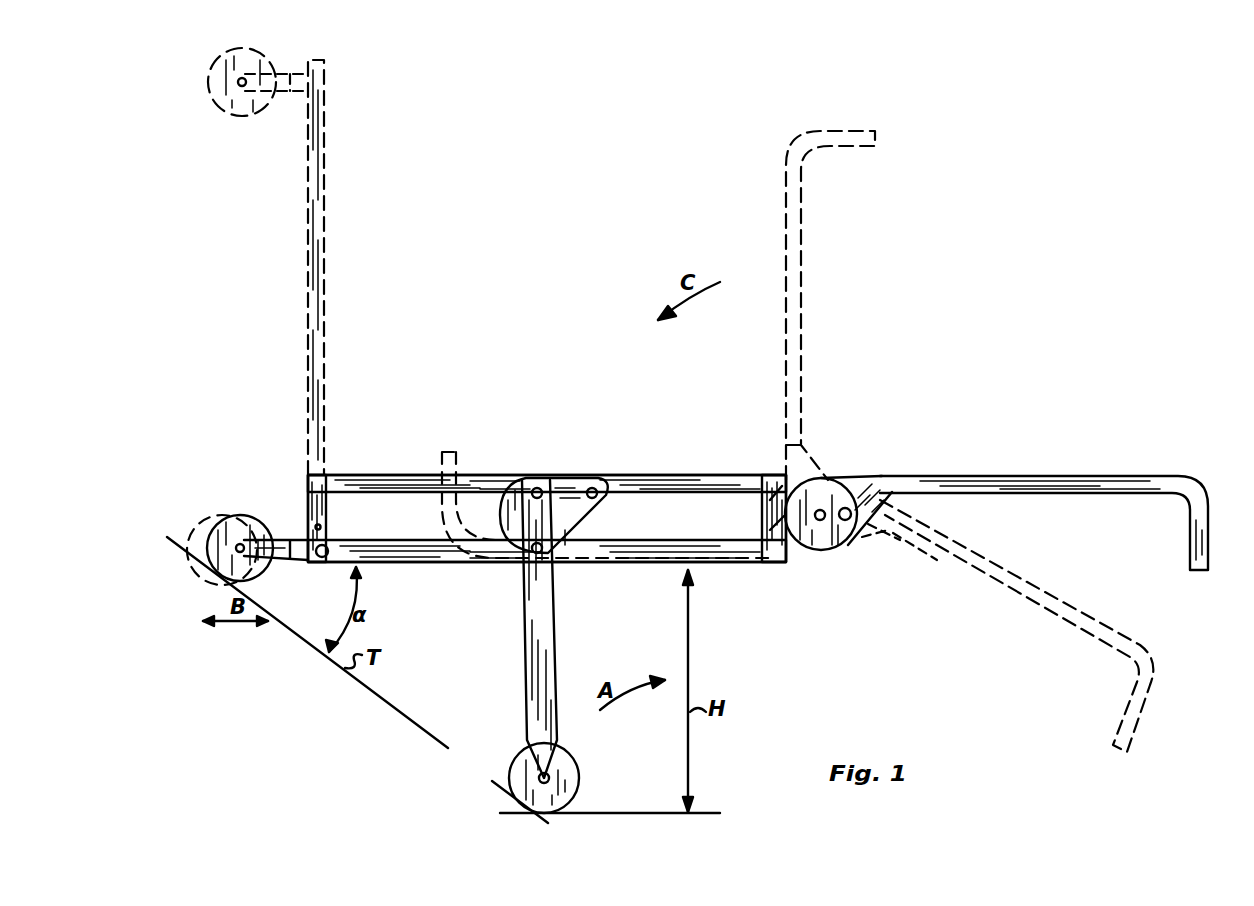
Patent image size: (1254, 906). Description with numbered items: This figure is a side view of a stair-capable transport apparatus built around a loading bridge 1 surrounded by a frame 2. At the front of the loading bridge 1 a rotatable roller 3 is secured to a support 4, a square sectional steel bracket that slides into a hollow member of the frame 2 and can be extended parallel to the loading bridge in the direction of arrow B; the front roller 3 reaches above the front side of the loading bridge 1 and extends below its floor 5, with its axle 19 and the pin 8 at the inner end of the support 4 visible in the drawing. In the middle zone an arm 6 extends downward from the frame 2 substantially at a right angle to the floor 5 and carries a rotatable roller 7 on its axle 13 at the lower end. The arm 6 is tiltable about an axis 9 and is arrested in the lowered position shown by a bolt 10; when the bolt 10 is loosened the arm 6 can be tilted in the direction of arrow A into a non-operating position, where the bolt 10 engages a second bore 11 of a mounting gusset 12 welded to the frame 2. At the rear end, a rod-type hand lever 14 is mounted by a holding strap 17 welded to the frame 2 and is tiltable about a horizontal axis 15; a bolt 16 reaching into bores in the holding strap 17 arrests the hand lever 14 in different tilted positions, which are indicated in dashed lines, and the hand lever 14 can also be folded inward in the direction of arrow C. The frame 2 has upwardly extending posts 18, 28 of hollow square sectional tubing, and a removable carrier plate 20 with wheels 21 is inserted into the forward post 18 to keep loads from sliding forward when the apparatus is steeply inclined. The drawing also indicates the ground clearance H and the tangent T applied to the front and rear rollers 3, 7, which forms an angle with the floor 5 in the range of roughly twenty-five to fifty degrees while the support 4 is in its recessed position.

The loading bridge 1 is at (662, 512).
The frame 2 is at (388, 486).
The rotatable rollers 3 is at (258, 528).
The support 4 is at (284, 560).
The floor 5 is at (705, 566).
The arm 6 is at (554, 634).
The rotatable roller 7 is at (522, 778).
The pivot pin 8 is at (326, 557).
The axis 9 is at (538, 488).
The bolt 10 is at (532, 552).
The second bore 11 is at (593, 488).
The mounting gusset 12 is at (572, 515).
The wheel axle 13 is at (540, 777).
The hand lever 14 is at (800, 268).
The horizontal axis 15 is at (820, 521).
The bolt 16 is at (850, 508).
The holding strap 17 is at (820, 497).
The post 18 is at (308, 490).
The wheel axle 19 is at (238, 545).
The carrier plate 20 is at (326, 300).
The wheels 21 is at (258, 105).
The post 28 is at (772, 500).